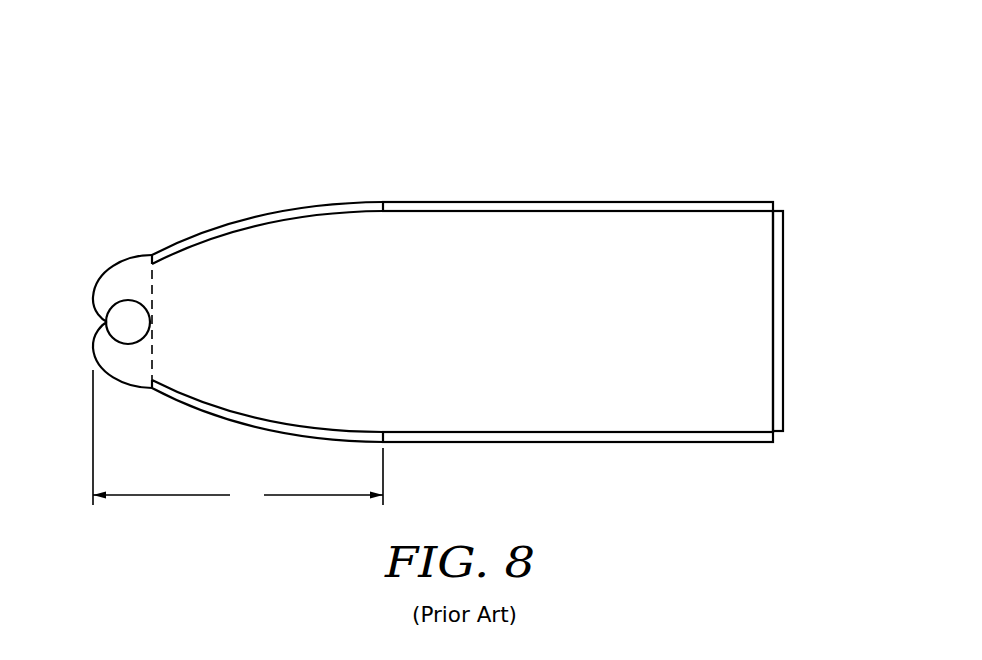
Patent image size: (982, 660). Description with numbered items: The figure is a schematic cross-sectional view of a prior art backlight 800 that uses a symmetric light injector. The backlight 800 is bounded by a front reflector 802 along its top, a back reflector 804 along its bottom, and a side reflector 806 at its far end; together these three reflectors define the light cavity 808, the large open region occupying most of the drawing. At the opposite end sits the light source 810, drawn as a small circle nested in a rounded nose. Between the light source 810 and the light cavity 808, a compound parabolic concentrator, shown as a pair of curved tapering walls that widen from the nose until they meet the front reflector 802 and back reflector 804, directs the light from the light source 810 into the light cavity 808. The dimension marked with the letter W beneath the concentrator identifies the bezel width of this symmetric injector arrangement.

The backlight 800 is at (265, 129).
The front reflector 802 is at (562, 202).
The back reflector 804 is at (571, 443).
The side reflector 806 is at (784, 313).
The light cavity 808 is at (510, 320).
The light source 810 is at (106, 259).